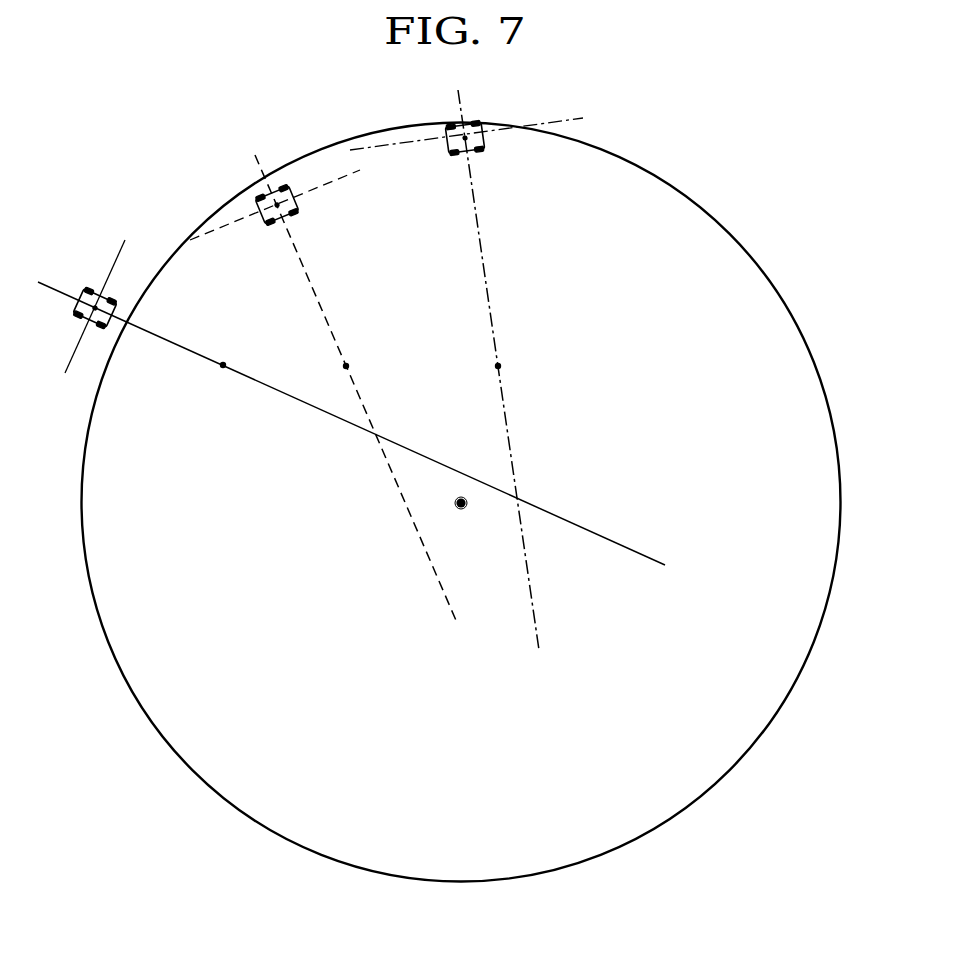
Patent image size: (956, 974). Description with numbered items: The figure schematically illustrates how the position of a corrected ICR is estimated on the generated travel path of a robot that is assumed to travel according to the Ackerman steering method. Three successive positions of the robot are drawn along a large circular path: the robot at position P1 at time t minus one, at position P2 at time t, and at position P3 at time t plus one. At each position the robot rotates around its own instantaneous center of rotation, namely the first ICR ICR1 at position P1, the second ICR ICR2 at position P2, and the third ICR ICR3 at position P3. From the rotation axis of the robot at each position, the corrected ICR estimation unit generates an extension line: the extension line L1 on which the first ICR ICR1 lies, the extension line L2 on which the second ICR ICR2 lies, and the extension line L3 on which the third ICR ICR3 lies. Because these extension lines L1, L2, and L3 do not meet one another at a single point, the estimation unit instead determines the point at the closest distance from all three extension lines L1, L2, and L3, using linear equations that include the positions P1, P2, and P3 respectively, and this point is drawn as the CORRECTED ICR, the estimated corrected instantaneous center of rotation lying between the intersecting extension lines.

The position of the robot at time t−1 P1 is at (95, 306).
The position of the robot at time t P2 is at (275, 197).
The position of the robot at time t+1 P3 is at (466, 123).
The extension line from the rotation axis at position P1 L1 is at (603, 535).
The extension line from the rotation axis at position P2 L2 is at (435, 570).
The extension line from the rotation axis at position P3 L3 is at (513, 463).
The first ICR ICR1 is at (222, 380).
The second ICR ICR2 is at (323, 366).
The third ICR ICR3 is at (474, 366).
The corrected ICR CORRECTED ICR is at (457, 503).